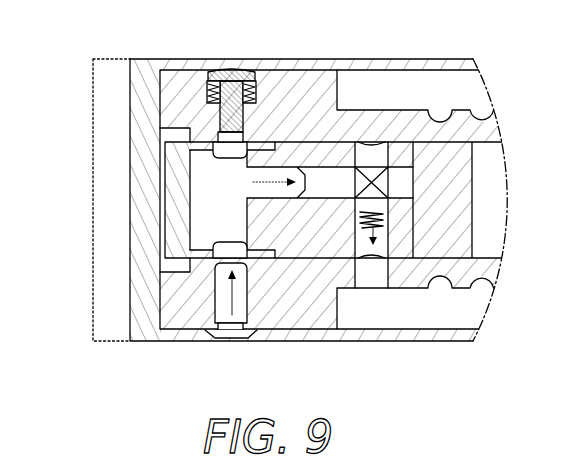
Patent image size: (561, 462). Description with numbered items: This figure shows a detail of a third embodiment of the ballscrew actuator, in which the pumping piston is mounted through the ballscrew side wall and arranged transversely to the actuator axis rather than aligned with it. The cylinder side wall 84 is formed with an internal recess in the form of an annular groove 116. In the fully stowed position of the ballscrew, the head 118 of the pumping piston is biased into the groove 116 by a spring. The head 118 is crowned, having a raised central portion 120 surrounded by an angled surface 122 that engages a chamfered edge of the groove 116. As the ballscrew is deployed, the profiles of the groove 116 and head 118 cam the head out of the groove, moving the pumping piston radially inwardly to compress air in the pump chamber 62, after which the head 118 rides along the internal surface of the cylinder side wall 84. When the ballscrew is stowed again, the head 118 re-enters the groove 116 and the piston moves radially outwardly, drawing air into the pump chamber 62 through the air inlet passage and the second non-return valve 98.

The pump chamber 62 is at (205, 192).
The cylinder side wall 84 is at (428, 336).
The second non-return valve 98 is at (222, 297).
The annular groove 116 is at (240, 333).
The head of the pumping piston 118 is at (208, 72).
The raised central portion 120 is at (223, 70).
The angled surface 122 is at (245, 70).